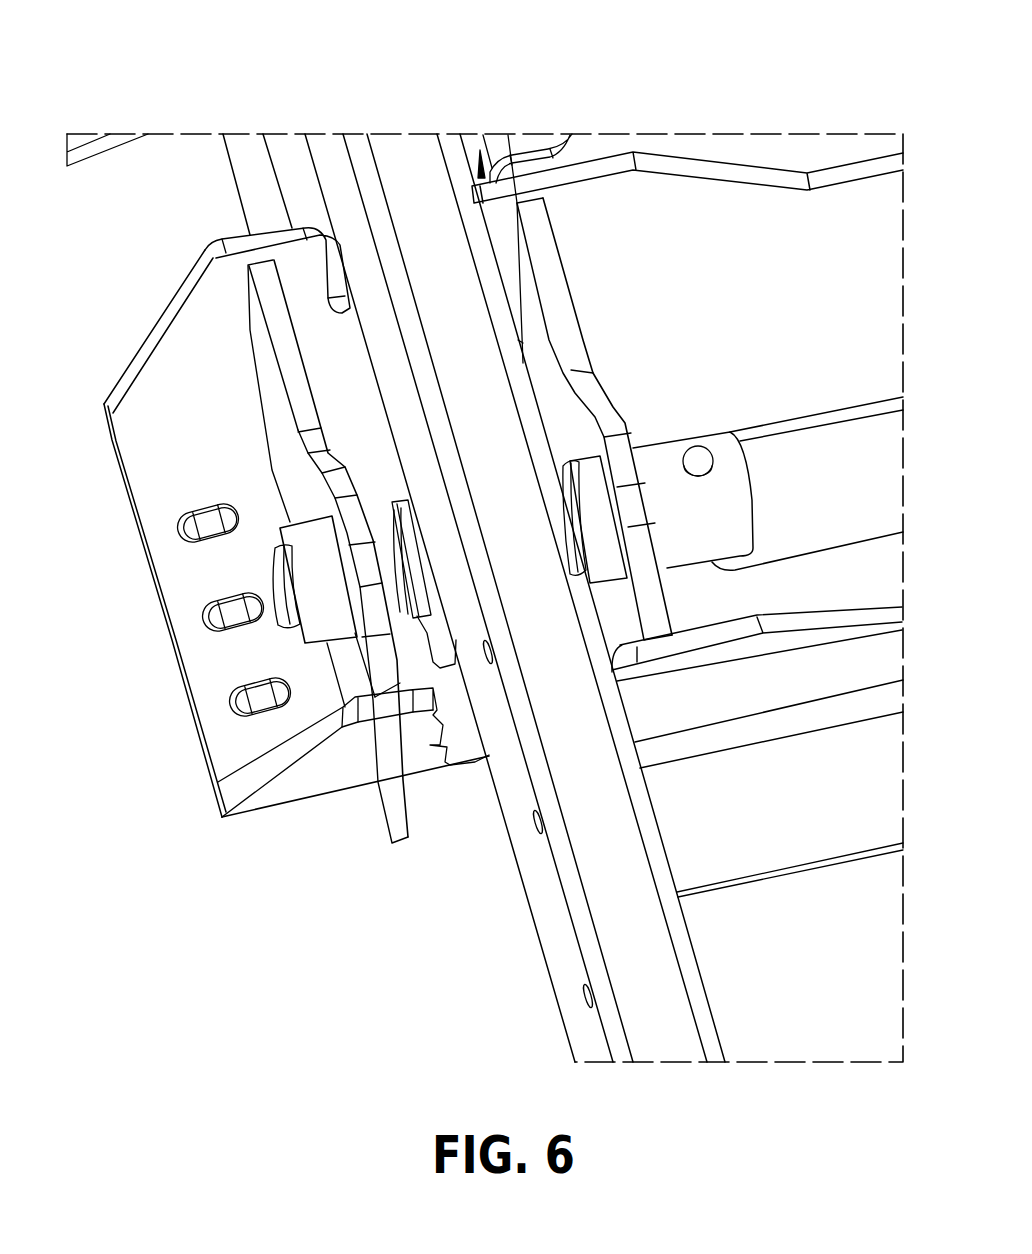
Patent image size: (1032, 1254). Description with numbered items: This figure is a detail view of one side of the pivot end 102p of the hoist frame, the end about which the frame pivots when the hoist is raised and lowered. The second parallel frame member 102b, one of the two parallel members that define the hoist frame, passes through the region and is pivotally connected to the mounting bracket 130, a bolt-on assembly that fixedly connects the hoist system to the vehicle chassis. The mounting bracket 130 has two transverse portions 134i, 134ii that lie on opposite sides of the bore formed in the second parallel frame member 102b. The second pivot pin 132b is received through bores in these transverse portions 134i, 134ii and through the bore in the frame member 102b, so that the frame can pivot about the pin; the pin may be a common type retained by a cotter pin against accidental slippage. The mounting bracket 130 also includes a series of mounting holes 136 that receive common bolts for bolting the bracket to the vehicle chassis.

The second parallel frame member 102b is at (538, 937).
The pivot end 102p is at (720, 123).
The mounting bracket 130 is at (310, 805).
The second pivot pin 132b is at (305, 645).
The first transverse portion 134i is at (273, 347).
The second transverse portion 134ii is at (551, 258).
The mounting holes 136 is at (207, 622).